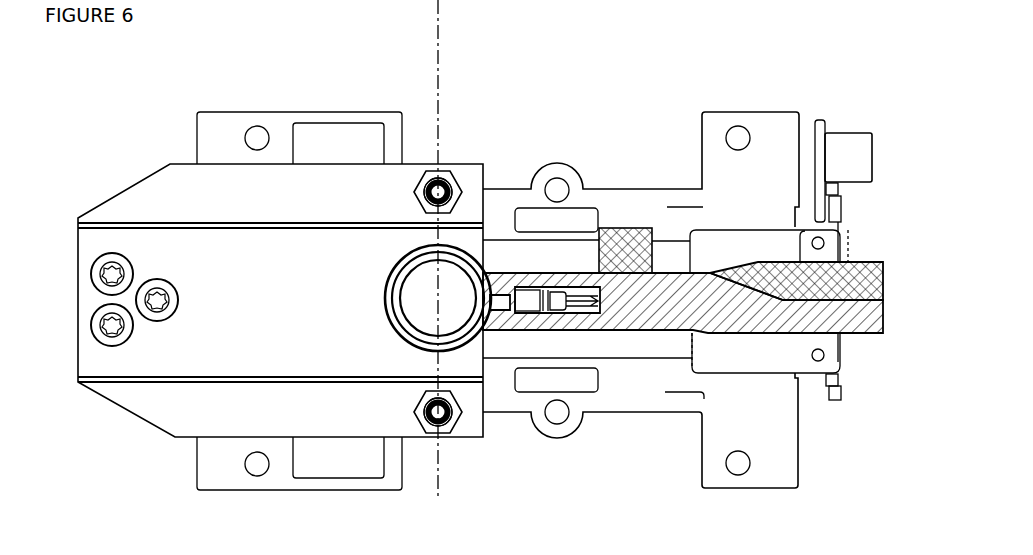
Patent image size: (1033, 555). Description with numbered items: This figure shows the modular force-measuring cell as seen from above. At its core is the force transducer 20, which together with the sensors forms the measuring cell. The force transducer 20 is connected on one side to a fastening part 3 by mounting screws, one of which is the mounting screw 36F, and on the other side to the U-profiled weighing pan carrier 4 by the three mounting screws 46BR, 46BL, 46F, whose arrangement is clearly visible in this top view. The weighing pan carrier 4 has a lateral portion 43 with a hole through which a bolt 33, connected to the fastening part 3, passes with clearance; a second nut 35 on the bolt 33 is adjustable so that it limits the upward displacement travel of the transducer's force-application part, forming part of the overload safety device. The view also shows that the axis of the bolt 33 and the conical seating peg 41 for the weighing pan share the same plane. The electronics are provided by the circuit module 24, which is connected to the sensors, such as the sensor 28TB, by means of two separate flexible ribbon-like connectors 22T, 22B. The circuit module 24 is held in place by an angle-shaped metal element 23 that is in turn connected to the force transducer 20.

The fastening part 3 is at (599, 418).
The weighing pan carrier 4 is at (178, 196).
The force transducer 20 is at (566, 260).
The ribbon connector 22B is at (743, 268).
The ribbon connector 22T is at (790, 258).
The angle-shaped metal element 23 is at (755, 348).
The circuit module 24 is at (845, 138).
The sensor 28TB is at (590, 332).
The bolt 33 is at (445, 166).
The second nut 35 is at (433, 168).
The mounting screw 36F is at (455, 248).
The conical seating peg 41 is at (425, 298).
The lateral portion 43 is at (354, 198).
The mounting screw 46BR is at (133, 270).
The mounting screw 46F is at (178, 300).
The mounting screw 46BL is at (135, 332).